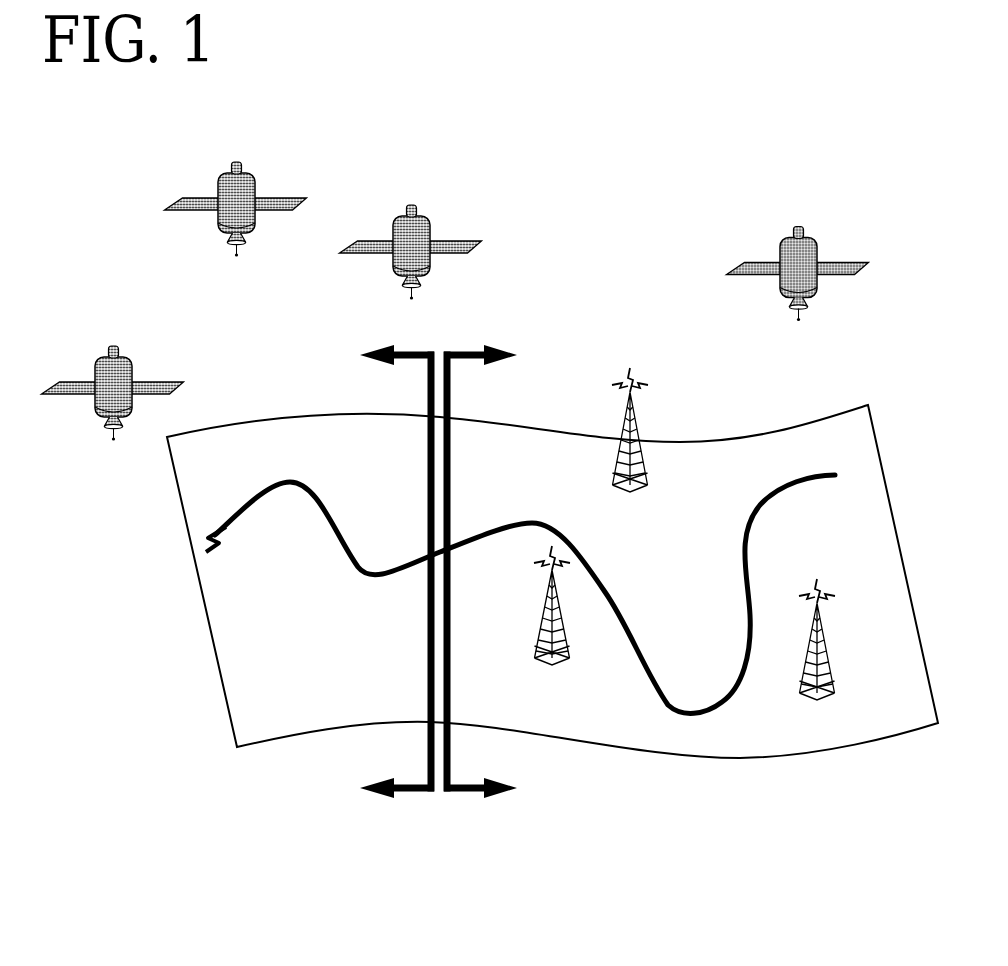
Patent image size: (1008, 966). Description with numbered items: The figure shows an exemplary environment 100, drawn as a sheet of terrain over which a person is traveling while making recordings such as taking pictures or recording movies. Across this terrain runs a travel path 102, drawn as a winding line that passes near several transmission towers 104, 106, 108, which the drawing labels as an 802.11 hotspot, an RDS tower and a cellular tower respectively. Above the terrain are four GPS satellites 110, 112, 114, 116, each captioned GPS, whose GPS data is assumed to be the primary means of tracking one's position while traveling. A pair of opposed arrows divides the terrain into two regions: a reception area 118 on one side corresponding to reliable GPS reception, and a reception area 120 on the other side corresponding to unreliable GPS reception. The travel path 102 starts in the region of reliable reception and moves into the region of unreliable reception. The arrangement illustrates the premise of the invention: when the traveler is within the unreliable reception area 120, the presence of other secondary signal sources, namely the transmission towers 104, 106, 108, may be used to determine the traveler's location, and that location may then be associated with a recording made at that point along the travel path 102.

The environment 100 is at (290, 417).
The travel path 102 is at (278, 480).
The transmission tower 104 is at (537, 615).
The transmission tower 106 is at (647, 440).
The transmission tower 108 is at (833, 648).
The GPS satellite 110 is at (113, 345).
The GPS satellite 112 is at (238, 162).
The GPS satellite 114 is at (412, 203).
The GPS satellite 116 is at (800, 226).
The reception area 118 is at (410, 791).
The reception area 120 is at (467, 791).